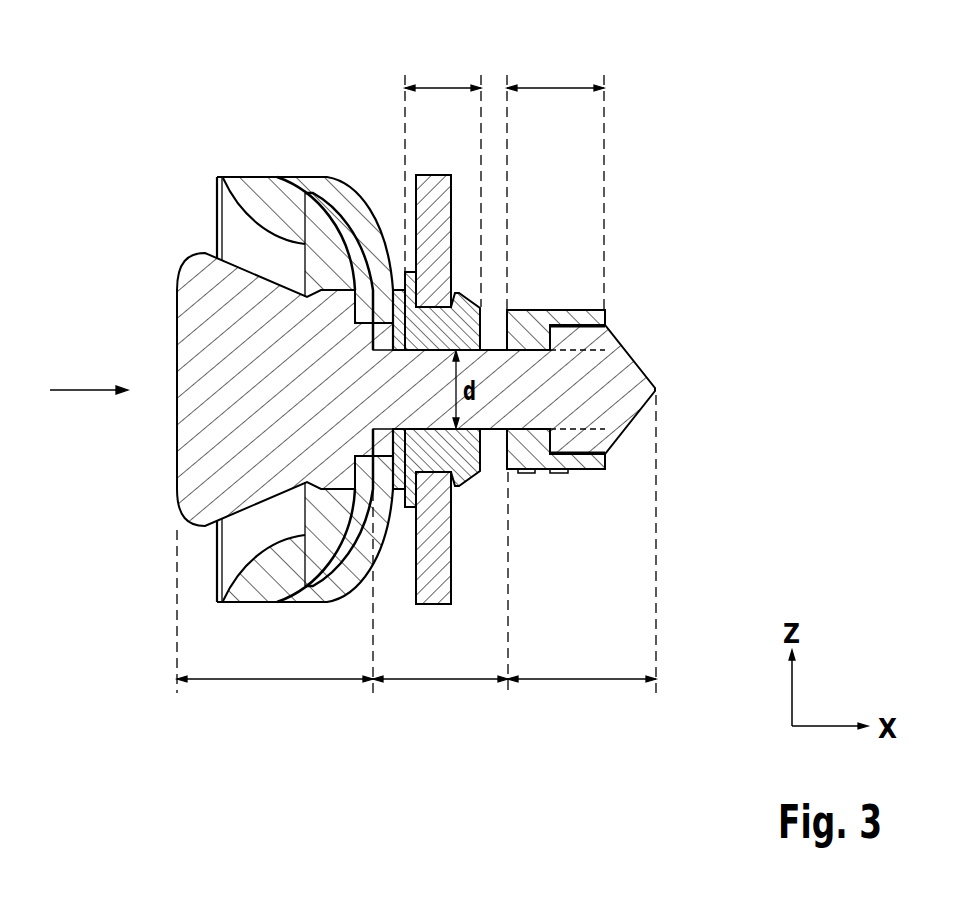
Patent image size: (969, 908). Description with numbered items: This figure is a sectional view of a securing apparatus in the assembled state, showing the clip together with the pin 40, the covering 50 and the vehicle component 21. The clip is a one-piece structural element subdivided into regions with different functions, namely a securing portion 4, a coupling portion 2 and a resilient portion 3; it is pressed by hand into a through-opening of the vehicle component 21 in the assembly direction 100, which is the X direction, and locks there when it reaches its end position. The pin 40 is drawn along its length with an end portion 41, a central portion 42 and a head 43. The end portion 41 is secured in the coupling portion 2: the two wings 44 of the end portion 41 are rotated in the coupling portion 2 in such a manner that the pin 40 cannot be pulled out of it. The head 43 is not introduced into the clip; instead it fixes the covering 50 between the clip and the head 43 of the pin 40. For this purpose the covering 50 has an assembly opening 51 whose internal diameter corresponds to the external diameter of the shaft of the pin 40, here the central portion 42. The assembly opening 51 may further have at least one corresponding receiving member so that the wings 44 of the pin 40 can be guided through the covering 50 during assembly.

The coupling portion 2 is at (557, 88).
The resilient portion 3 is at (490, 458).
The securing portion 4 is at (445, 88).
The vehicle component 21 is at (430, 188).
The pin 40 is at (177, 513).
The end portion 41 is at (580, 682).
The central portion 42 is at (440, 682).
The head 43 is at (275, 682).
The wings 44 is at (602, 436).
The covering 50 is at (312, 190).
The assembly opening 51 is at (387, 340).
The assembly direction 100 is at (78, 392).